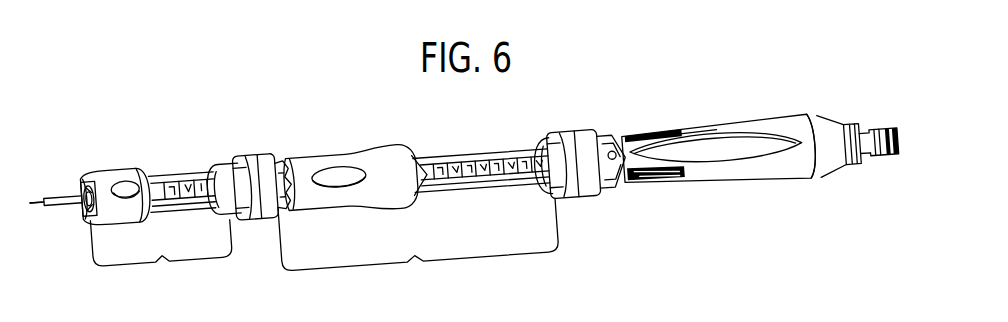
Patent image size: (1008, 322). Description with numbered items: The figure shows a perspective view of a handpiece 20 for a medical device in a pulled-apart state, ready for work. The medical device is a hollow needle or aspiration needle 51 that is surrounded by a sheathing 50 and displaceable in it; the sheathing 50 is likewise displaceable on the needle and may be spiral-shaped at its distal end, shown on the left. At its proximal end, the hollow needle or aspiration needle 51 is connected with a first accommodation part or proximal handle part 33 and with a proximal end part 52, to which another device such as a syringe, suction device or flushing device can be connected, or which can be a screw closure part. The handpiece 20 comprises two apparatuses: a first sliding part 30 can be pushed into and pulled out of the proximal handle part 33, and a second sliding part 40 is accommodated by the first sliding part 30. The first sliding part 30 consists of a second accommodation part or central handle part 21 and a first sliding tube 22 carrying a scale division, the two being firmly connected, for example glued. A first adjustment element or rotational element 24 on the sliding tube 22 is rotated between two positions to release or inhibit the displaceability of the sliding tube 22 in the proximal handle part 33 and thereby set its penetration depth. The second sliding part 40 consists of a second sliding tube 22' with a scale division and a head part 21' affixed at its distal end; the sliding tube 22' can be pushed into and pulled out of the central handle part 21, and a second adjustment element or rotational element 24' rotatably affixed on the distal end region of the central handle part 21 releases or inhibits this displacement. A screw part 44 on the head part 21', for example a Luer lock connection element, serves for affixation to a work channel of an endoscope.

The handpiece 20 is at (337, 146).
The second accommodation part or central handle part 21 is at (355, 196).
The head part 21' is at (116, 177).
The first sliding tube 22 is at (481, 189).
The second sliding tube 22' is at (181, 170).
The first adjustment element or rotational element 24 is at (579, 188).
The second adjustment element or rotational element 24' is at (249, 213).
The first sliding part 30 is at (453, 215).
The first accommodation part or proximal handle part 33 is at (731, 148).
The second sliding part 40 is at (183, 218).
The screw part 44 is at (84, 222).
The sheathing 50 is at (65, 210).
The hollow needle or aspiration needle 51 is at (41, 200).
The proximal end part 52 is at (892, 157).